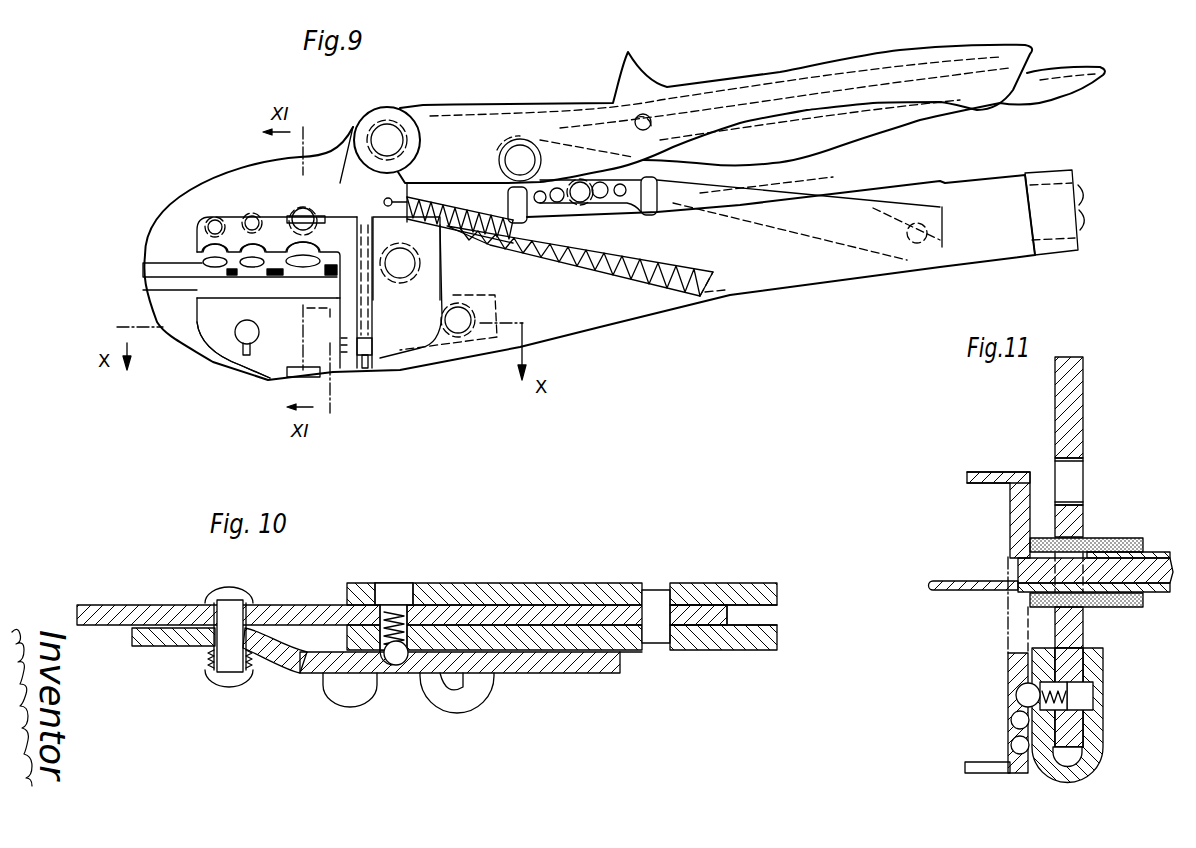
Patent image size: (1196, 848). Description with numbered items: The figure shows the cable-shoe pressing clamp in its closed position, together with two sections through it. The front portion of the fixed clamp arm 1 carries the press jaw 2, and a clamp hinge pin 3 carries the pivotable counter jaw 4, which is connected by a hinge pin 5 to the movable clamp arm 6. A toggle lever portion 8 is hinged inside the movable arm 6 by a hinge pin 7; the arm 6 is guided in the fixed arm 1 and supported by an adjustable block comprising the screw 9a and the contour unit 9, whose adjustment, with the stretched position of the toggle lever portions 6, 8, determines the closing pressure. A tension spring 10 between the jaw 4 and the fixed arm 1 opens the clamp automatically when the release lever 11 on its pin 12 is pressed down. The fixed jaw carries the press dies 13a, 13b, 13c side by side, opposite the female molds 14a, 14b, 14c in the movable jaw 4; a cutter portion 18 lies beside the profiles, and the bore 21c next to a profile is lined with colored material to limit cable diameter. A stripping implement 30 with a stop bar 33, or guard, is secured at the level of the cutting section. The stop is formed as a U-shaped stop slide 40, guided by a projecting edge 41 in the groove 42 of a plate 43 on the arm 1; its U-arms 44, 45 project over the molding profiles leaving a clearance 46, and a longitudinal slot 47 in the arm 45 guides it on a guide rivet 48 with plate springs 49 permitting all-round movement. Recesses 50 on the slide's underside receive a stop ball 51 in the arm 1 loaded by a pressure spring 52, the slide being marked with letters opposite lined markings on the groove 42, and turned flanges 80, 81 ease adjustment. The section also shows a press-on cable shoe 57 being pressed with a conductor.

In FIG. 9, the fixed clamp arm 1 is at (750, 268).
In FIG. 10, the fixed clamp arm 1 is at (540, 597).
In FIG. 11, the fixed clamp arm 1 is at (1040, 737).
In FIG. 9, the press jaw 2 is at (183, 332).
In FIG. 10, the press jaw 2 is at (690, 622).
In FIG. 11, the press jaw 2 is at (1093, 747).
In FIG. 9, the clamp hinge pin 3 is at (345, 222).
In FIG. 9, the counter jaw 4 is at (340, 183).
In FIG. 11, the counter jaw 4 is at (1067, 420).
In FIG. 9, the hinge pin 5 is at (400, 148).
In FIG. 9, the movable clamp arm 6 is at (557, 105).
In FIG. 9, the hinge pin 7 is at (518, 150).
In FIG. 9, the toggle lever portion 8 is at (752, 190).
In FIG. 9, the contour unit 9 is at (1073, 228).
In FIG. 9, the screw 9a is at (1075, 198).
In FIG. 9, the tension spring 10 is at (460, 215).
In FIG. 9, the release lever 11 is at (863, 130).
In FIG. 9, the pin 12 is at (637, 117).
In FIG. 9, the press die 13a is at (215, 268).
In FIG. 9, the press die 13b is at (250, 268).
In FIG. 9, the press die 13c is at (302, 268).
In FIG. 9, the female mold 14a is at (215, 220).
In FIG. 9, the female mold 14b is at (250, 216).
In FIG. 9, the female mold 14c is at (313, 210).
In FIG. 9, the cutter portion 18 is at (364, 300).
In FIG. 11, the bore 21c is at (1063, 470).
In FIG. 9, the stripping implement 30 is at (594, 232).
In FIG. 9, the stop bar 33 is at (652, 232).
In FIG. 9, the stop slide 40 is at (380, 143).
In FIG. 10, the stop slide 40 is at (290, 655).
In FIG. 9, the projecting edge 41 is at (367, 368).
In FIG. 10, the projecting edge 41 is at (457, 690).
In FIG. 9, the groove 42 is at (430, 300).
In FIG. 10, the groove 42 is at (477, 700).
In FIG. 9, the plate 43 is at (441, 290).
In FIG. 10, the plate 43 is at (550, 662).
In FIG. 9, the U-arm 44 is at (197, 237).
In FIG. 11, the U-arm 44 is at (1017, 530).
In FIG. 9, the U-arm 45 is at (197, 308).
In FIG. 11, the U-arm 45 is at (1007, 763).
In FIG. 9, the clearance 46 is at (197, 257).
In FIG. 11, the clearance 46 is at (1017, 620).
In FIG. 9, the longitudinal slot 47 is at (250, 356).
In FIG. 9, the guide rivet 48 is at (247, 345).
In FIG. 10, the guide rivet 48 is at (222, 677).
In FIG. 10, the plate springs 49 is at (207, 667).
In FIG. 10, the recesses 50 is at (402, 668).
In FIG. 11, the recesses 50 is at (1013, 718).
In FIG. 10, the stop ball 51 is at (390, 672).
In FIG. 11, the stop ball 51 is at (1028, 693).
In FIG. 10, the pressure spring 52 is at (392, 608).
In FIG. 11, the pressure spring 52 is at (1093, 690).
In FIG. 11, the press-on cable shoe 57 is at (937, 580).
In FIG. 9, the turned flange 80 is at (318, 377).
In FIG. 10, the turned flange 80 is at (348, 700).
In FIG. 11, the turned flange 80 is at (977, 768).
In FIG. 9, the turned flange 81 is at (298, 214).
In FIG. 11, the turned flange 81 is at (997, 483).